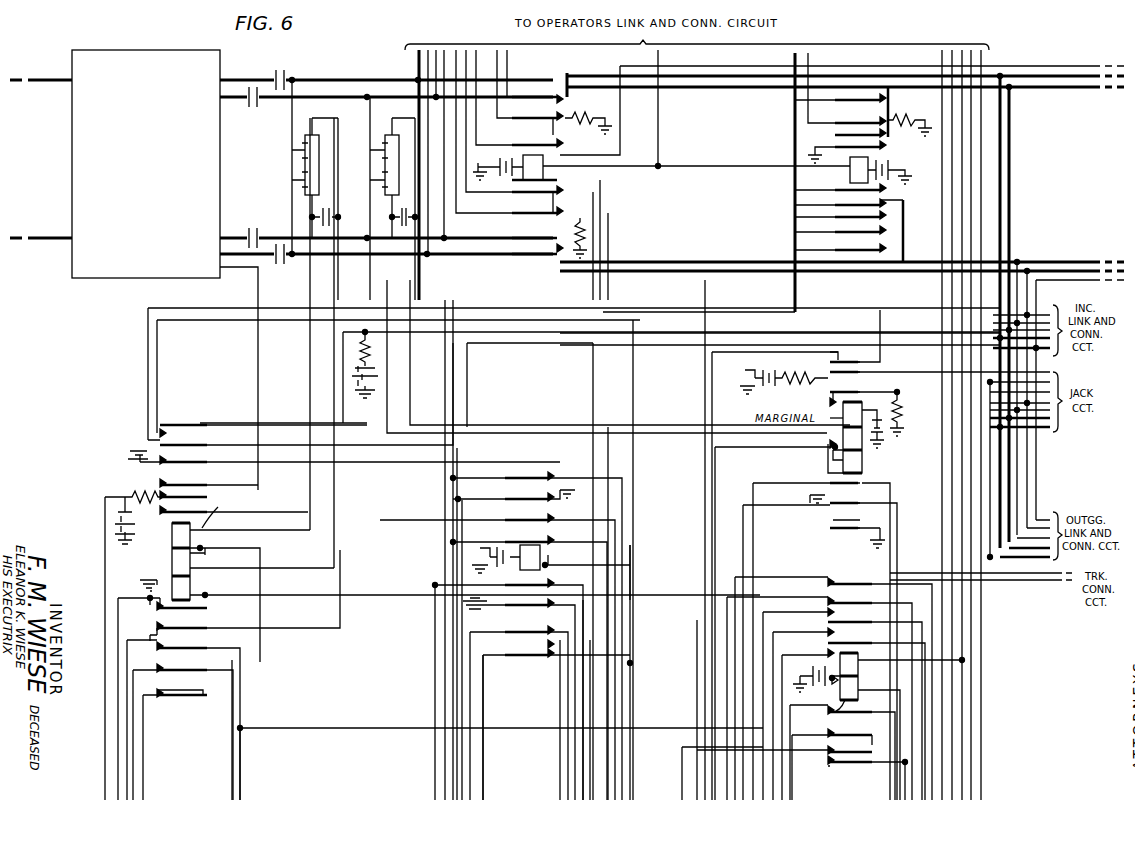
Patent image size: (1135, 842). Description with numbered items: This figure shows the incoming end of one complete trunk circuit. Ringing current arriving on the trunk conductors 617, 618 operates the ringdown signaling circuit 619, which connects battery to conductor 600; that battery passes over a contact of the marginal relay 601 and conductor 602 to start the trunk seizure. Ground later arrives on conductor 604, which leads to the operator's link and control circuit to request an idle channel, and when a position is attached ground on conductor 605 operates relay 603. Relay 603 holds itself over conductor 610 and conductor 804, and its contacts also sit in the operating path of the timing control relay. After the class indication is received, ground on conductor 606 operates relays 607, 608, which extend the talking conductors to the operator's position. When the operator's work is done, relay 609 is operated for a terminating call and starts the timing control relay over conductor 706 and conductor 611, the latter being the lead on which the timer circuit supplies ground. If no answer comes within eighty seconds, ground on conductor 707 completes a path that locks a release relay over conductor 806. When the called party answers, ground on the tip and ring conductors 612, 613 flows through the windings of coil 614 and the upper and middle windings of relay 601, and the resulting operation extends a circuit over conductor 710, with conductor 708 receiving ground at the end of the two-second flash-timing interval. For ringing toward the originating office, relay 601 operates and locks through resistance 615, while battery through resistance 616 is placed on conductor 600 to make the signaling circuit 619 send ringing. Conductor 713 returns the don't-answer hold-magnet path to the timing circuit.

The conductor 600 is at (238, 270).
The relay 601 is at (172, 558).
The conductor 602 is at (102, 592).
The relay 603 is at (828, 718).
The conductor 604 is at (952, 201).
The conductor 605 is at (962, 173).
The conductor 606 is at (658, 118).
The relay 607 is at (532, 180).
The relay 608 is at (850, 172).
The relay 609 is at (522, 545).
The conductor 610 is at (884, 694).
The conductor 611 is at (238, 750).
The tip conductor 612 is at (1096, 96).
The ring conductor 613 is at (1060, 265).
The coil 614 is at (305, 163).
The resistance 615 is at (368, 335).
The resistance 616 is at (130, 485).
The trunk conductor 617 is at (36, 82).
The trunk conductor 618 is at (50, 238).
The signaling circuit 619 is at (142, 50).
The conductor 706 is at (470, 707).
The conductor 707 is at (630, 565).
The conductor 708 is at (147, 738).
The conductor 710 is at (808, 642).
The conductor 713 is at (583, 693).
The conductor 804 is at (682, 770).
The conductor 806 is at (633, 632).